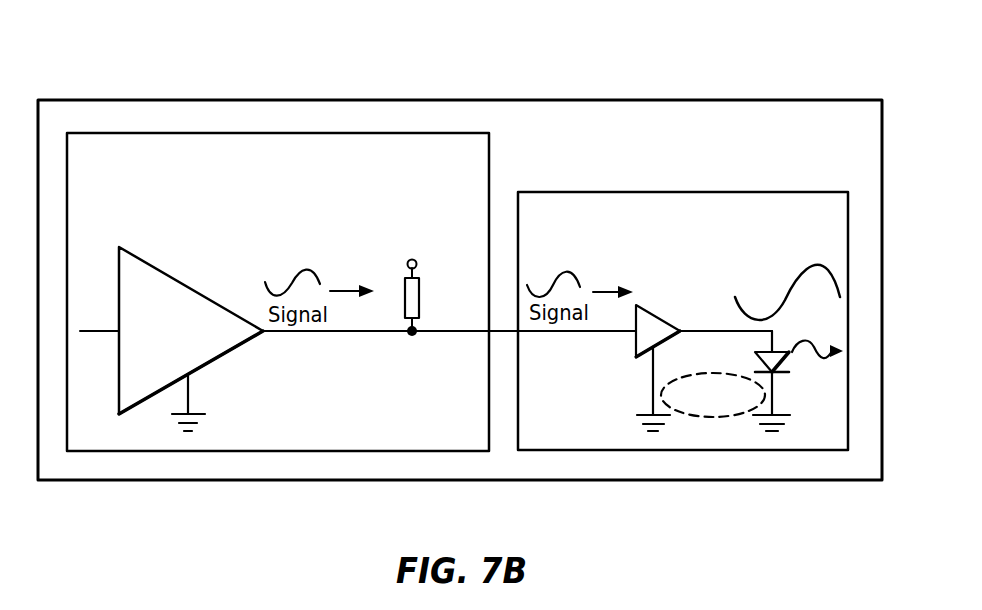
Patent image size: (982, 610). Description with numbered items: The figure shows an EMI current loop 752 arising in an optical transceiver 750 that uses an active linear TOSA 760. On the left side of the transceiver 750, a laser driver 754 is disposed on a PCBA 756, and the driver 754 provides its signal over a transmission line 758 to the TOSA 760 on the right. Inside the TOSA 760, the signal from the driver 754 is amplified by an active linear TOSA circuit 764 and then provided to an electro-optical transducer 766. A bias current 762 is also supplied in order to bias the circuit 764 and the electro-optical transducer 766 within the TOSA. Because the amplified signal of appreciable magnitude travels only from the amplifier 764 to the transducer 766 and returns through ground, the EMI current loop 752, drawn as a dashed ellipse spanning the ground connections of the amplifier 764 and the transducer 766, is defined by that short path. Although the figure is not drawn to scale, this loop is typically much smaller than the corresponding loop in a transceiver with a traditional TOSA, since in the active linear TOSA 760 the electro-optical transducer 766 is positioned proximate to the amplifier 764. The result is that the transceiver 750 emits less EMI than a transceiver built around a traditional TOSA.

The optical transceiver 750 is at (460, 100).
The EMI current loop 752 is at (713, 417).
The laser driver 754 is at (193, 285).
The PCBA 756 is at (297, 174).
The transmission line 758 is at (502, 331).
The active linear TOSA 760 is at (702, 228).
The bias current 762 is at (418, 262).
The active linear TOSA circuit 764 is at (660, 318).
The electro-optical transducer 766 is at (790, 370).